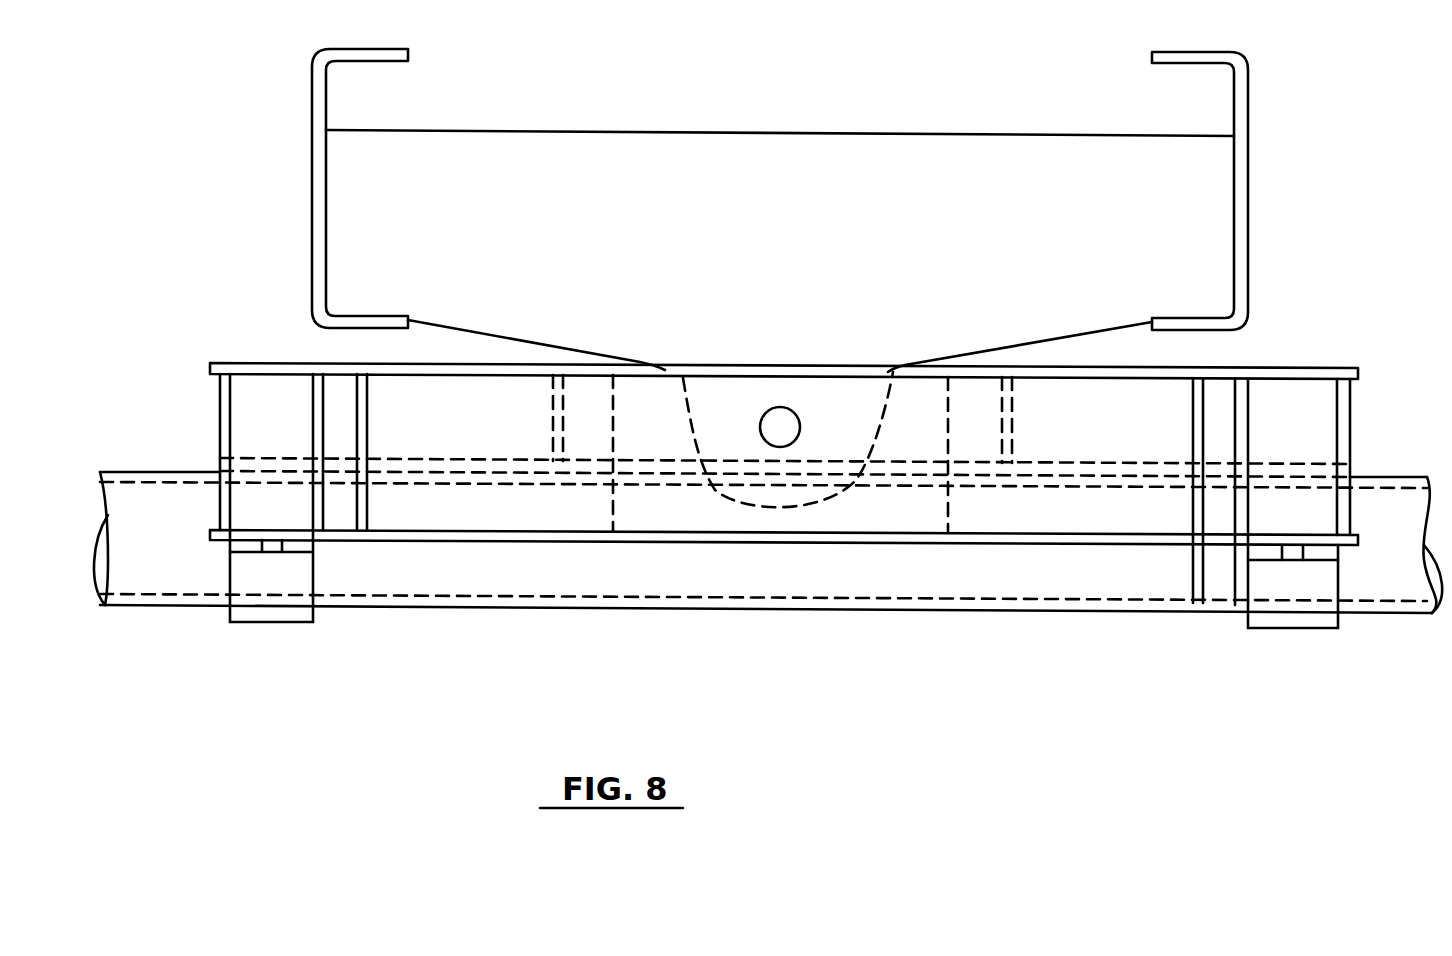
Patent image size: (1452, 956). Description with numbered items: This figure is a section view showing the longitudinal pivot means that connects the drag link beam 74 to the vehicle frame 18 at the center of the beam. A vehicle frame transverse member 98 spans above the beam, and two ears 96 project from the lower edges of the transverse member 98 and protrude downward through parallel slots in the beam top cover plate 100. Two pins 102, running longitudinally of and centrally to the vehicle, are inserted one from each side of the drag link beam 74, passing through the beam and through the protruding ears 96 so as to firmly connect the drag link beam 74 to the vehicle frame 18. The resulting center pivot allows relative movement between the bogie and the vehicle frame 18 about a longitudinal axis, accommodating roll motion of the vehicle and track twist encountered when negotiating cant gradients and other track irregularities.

The vehicle frame 18 is at (318, 107).
The vehicle frame transverse member 98 is at (643, 158).
The beam top cover plate 100 is at (490, 368).
The pins 102 is at (796, 407).
The ears 96 is at (828, 438).
The drag link beam 74 is at (456, 506).